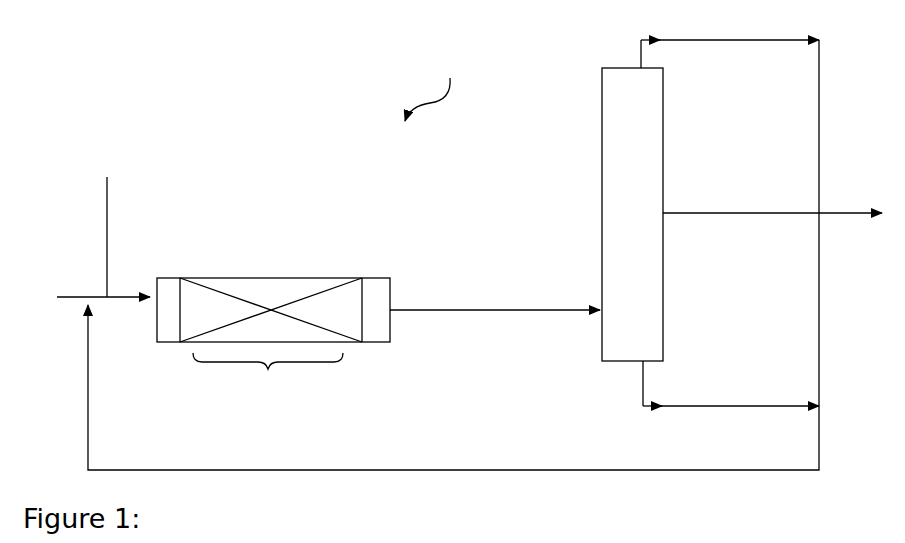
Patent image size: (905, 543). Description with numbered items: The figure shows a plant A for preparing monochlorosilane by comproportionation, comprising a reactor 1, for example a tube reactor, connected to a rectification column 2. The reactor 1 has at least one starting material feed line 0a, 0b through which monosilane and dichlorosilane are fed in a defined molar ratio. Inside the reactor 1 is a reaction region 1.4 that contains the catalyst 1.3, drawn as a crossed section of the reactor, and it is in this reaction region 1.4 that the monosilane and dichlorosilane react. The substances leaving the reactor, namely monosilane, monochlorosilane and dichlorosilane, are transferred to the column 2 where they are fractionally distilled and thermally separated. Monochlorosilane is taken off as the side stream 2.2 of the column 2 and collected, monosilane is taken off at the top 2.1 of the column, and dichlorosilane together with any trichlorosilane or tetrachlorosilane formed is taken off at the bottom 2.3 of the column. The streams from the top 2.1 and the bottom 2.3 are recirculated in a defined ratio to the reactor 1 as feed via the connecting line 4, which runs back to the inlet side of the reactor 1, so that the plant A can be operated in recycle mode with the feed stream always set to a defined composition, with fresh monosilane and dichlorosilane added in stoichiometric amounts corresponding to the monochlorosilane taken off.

The starting material feed line 0a is at (104, 219).
The starting material feed line 0b is at (104, 219).
The reactor 1 is at (275, 278).
The catalyst 1.3 is at (283, 297).
The reaction region 1.4 is at (268, 369).
The column 2 is at (602, 124).
The top of the column 2.1 is at (730, 56).
The side stream 2.2 is at (772, 200).
The bottom of the column 2.3 is at (731, 383).
The connecting line 4 is at (380, 472).
The plant A is at (427, 84).